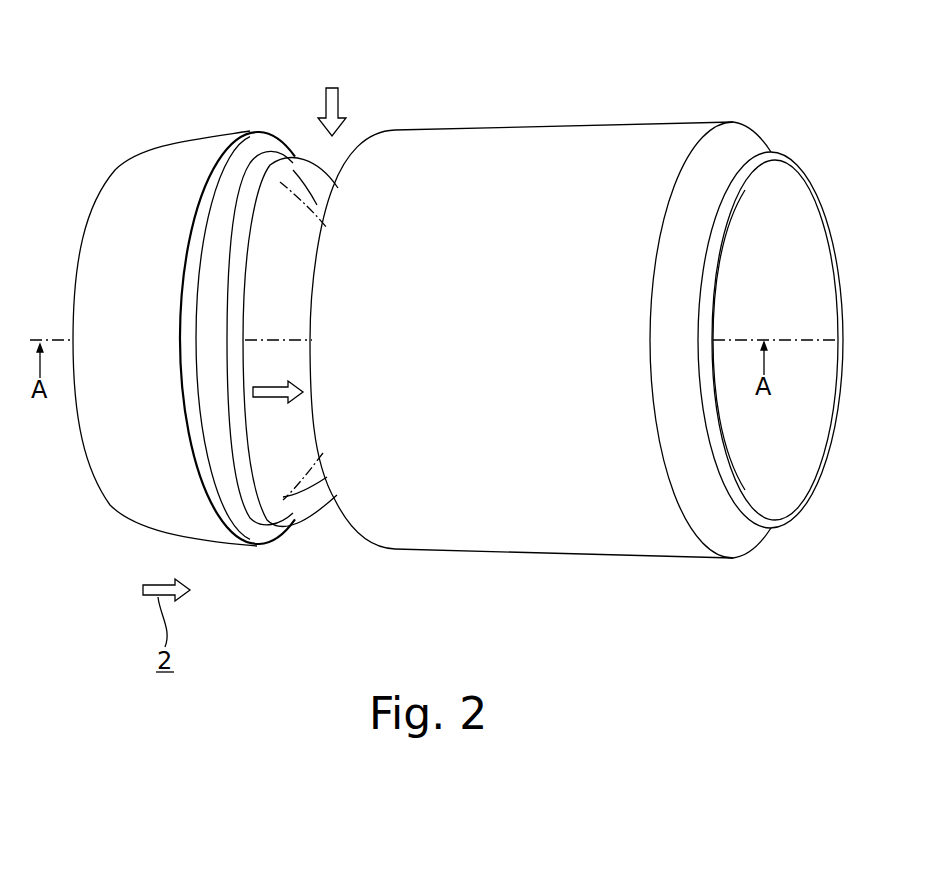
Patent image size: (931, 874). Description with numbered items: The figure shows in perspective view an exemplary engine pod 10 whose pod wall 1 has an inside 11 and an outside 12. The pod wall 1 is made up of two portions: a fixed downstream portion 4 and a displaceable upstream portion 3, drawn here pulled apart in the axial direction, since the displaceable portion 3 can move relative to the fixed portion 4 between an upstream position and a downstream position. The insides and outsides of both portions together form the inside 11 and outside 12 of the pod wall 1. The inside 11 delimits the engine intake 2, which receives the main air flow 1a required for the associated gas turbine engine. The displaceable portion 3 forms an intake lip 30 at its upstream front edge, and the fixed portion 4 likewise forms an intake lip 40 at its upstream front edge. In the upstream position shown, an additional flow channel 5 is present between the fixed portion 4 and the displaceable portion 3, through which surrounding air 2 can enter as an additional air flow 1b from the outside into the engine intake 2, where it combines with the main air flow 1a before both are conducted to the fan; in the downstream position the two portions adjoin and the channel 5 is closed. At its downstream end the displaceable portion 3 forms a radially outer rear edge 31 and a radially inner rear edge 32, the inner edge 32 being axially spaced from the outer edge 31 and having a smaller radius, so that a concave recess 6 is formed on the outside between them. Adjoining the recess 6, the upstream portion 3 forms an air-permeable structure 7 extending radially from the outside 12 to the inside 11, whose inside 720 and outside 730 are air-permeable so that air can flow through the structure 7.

The pod wall 1 is at (472, 330).
The main air flow 1a is at (301, 370).
The additional air flow 1b is at (328, 88).
The engine intake 2 is at (183, 341).
The displaceable upstream portion 3 is at (167, 163).
The fixed downstream portion 4 is at (522, 160).
The additional flow channel 5 is at (343, 533).
The recess 6 is at (243, 150).
The air-permeable structure 7 is at (322, 225).
The engine pod 10 is at (472, 313).
The inside 11 is at (267, 252).
The outside 12 is at (632, 143).
The intake lip 30 is at (102, 218).
The radially outer rear edge 31 is at (267, 547).
The radially inner rear edge 32 is at (325, 513).
The intake lip 40 is at (350, 153).
The inside 720 is at (293, 497).
The outside 730 is at (240, 497).